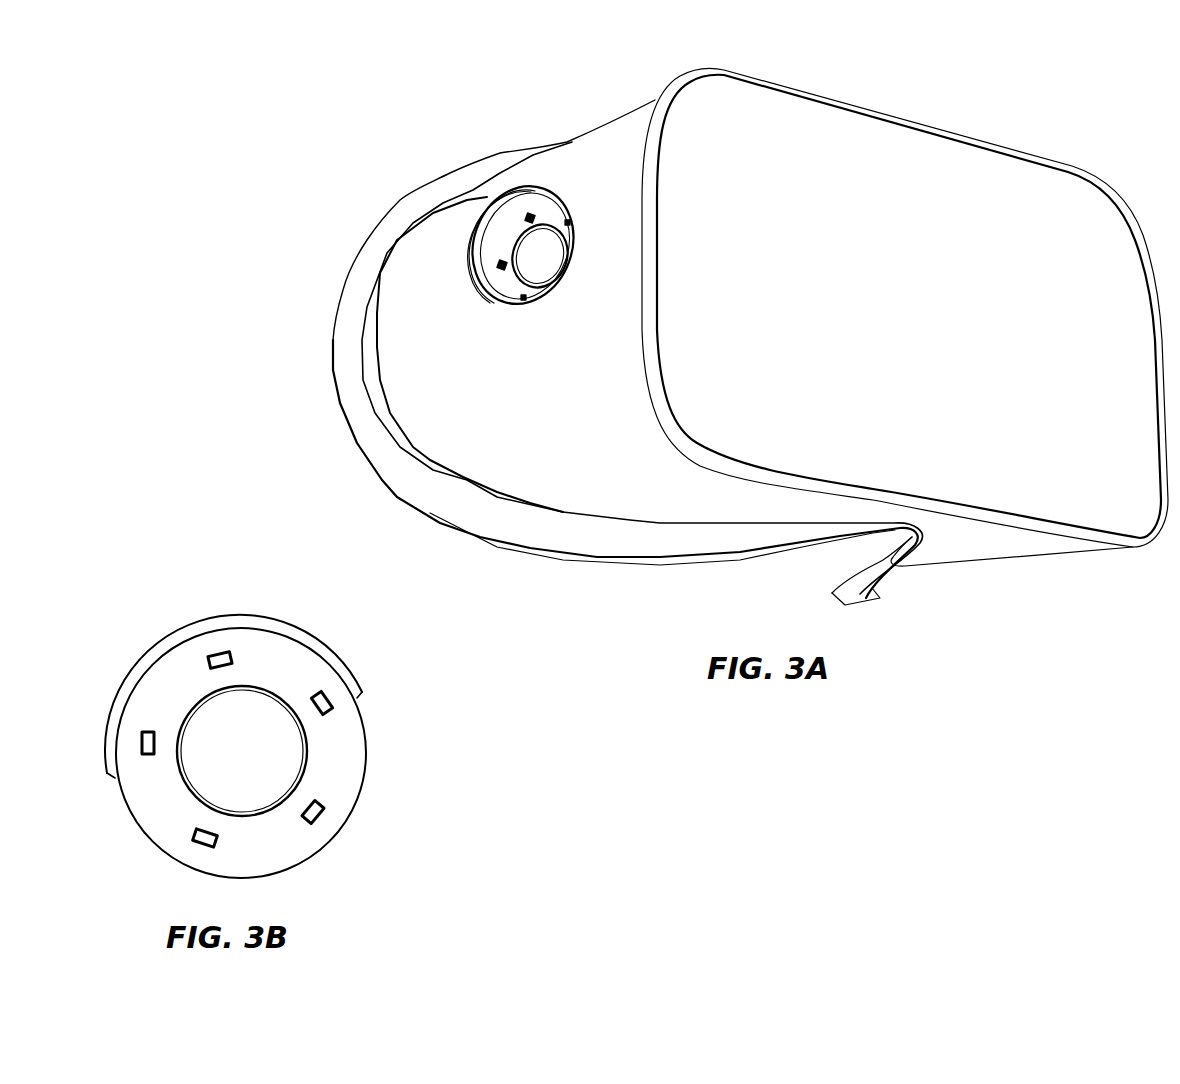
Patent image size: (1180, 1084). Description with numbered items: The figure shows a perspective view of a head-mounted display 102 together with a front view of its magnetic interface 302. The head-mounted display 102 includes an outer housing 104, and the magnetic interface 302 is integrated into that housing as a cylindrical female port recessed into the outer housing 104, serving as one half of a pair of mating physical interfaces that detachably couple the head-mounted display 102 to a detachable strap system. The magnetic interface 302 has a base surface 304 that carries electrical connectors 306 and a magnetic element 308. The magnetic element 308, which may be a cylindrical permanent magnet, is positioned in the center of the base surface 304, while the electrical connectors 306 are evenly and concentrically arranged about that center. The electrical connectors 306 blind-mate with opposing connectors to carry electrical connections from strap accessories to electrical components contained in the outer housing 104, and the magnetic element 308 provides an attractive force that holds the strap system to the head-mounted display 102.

In FIG. 3A, the head-mounted display 102 is at (989, 98).
In FIG. 3A, the outer housing 104 is at (572, 143).
In FIG. 3A, the magnetic interface 302 is at (540, 290).
In FIG. 3A, the base surface 304 is at (493, 290).
In FIG. 3B, the base surface 304 is at (123, 805).
In FIG. 3A, the electrical connectors 306 is at (527, 218).
In FIG. 3B, the electrical connectors 306 is at (220, 652).
In FIG. 3A, the magnetic element 308 is at (498, 240).
In FIG. 3B, the magnetic element 308 is at (242, 818).